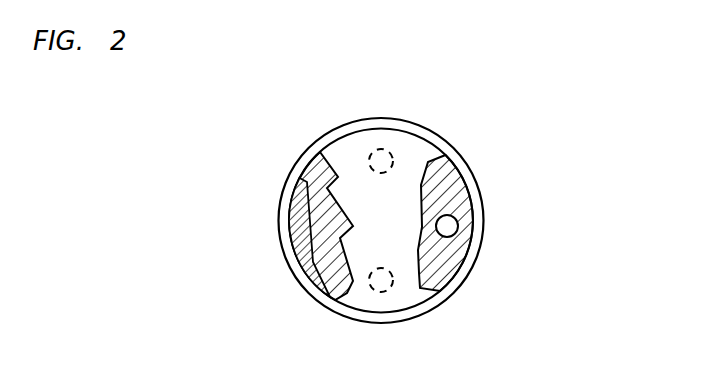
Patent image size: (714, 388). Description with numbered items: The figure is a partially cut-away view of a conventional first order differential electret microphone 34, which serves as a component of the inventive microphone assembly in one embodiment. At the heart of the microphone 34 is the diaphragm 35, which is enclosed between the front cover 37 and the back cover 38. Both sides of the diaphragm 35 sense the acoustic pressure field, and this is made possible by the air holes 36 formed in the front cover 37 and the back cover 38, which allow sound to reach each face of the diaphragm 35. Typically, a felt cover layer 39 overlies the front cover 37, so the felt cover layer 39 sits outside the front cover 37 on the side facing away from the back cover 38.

The FOD electret microphone 34 is at (285, 181).
The diaphragm 35 is at (413, 152).
The air holes 36 is at (386, 148).
The front cover 37 is at (332, 283).
The back cover 38 is at (448, 262).
The felt cover layer 39 is at (293, 232).